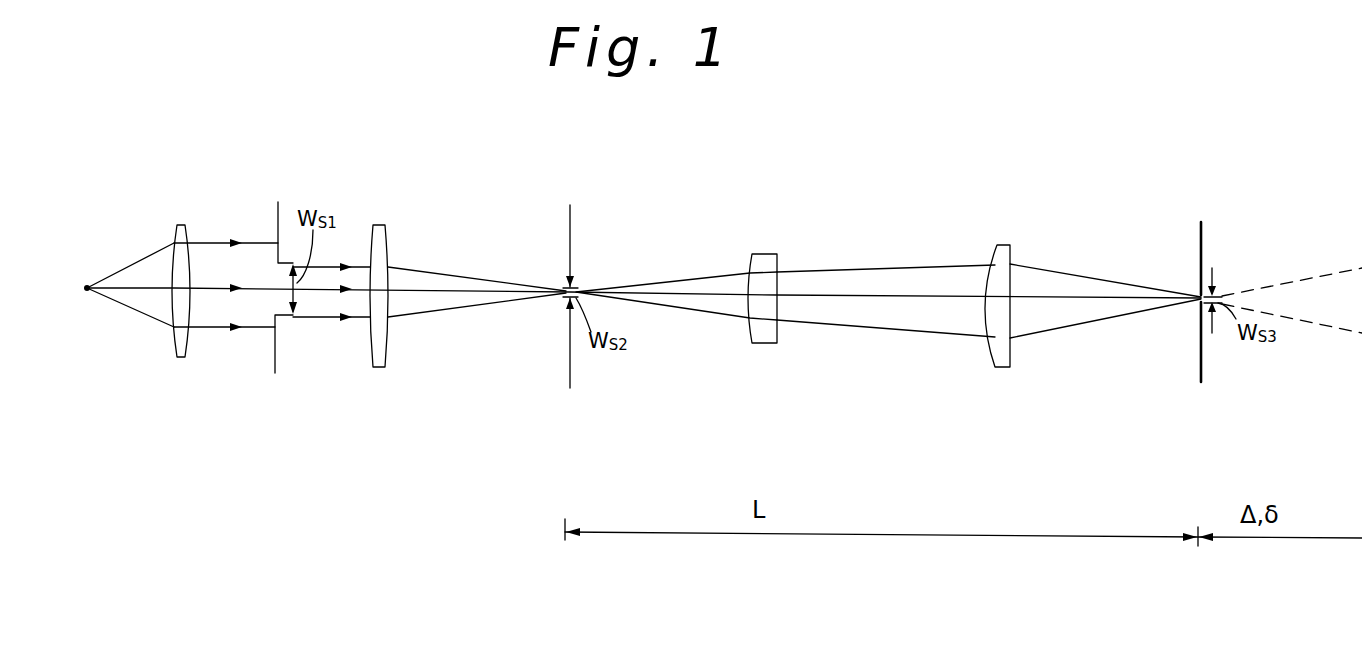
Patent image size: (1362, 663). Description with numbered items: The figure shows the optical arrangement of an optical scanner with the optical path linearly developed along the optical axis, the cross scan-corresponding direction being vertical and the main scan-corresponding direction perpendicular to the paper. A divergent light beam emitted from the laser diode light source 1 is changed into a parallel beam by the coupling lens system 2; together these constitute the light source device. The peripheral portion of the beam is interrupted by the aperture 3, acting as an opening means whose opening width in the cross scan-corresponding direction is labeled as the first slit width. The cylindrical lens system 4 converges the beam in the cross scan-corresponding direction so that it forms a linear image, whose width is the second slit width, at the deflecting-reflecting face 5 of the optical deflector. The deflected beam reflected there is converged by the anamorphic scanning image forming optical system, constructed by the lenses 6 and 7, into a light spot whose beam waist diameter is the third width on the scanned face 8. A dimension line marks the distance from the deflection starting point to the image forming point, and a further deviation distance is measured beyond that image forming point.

The laser diode light source 1 is at (86, 292).
The coupling lens system 2 is at (179, 357).
The aperture 3 is at (277, 372).
The cylindrical lens system 4 is at (378, 366).
The deflecting-reflecting face 5 is at (566, 387).
The lens 6 is at (768, 340).
The lens 7 is at (1000, 358).
The scanned face 8 is at (1197, 354).